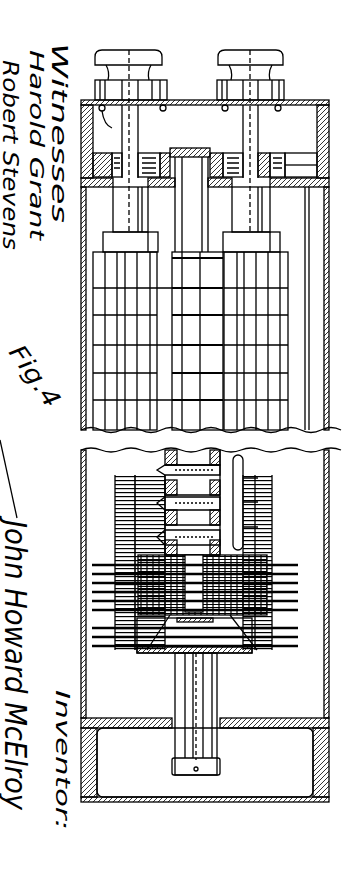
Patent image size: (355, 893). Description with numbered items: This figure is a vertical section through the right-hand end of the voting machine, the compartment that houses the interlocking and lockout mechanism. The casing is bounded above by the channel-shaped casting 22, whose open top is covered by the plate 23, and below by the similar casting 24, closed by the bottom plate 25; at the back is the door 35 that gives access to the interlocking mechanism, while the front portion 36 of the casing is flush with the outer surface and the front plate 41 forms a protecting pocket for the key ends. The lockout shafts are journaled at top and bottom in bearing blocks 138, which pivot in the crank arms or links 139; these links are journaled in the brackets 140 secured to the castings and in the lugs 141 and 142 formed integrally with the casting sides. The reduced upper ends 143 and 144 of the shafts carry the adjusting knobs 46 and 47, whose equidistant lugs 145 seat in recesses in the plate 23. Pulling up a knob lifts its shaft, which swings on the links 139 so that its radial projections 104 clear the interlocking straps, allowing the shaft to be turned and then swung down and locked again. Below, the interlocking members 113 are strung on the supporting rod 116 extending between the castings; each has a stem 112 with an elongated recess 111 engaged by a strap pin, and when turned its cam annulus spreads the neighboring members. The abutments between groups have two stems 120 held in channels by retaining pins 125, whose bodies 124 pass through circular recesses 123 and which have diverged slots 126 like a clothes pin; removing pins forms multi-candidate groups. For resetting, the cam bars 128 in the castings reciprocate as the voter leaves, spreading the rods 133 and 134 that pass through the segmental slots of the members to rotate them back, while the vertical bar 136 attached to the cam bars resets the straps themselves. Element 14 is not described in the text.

The casing top corner 14 is at (327, 98).
The channel-shaped casting 22 is at (321, 190).
The plate 23 is at (190, 94).
The channel-shaped casting 24 is at (305, 728).
The bottom plate 25 is at (263, 803).
The door 35 is at (329, 644).
The front portion of the casing 36 is at (63, 659).
The front plate 41 is at (354, 333).
The adjusting knob 46 is at (163, 61).
The adjusting knob 47 is at (285, 60).
The radial projections 104 is at (108, 308).
The recess 111 is at (287, 566).
The stem 112 is at (293, 655).
The interlocking member 113 is at (132, 550).
The supporting rod 116 is at (188, 648).
The stems 120 is at (258, 503).
The recesses 123 is at (208, 460).
The bodies 124 is at (160, 476).
The retaining pins 125 is at (243, 460).
The slots 126 is at (125, 500).
The cam bars 128 is at (197, 145).
The rod 133 is at (172, 750).
The rod 134 is at (222, 742).
The vertical bar 136 is at (205, 222).
The bearing blocks 138 is at (118, 150).
The crank arms or links 139 is at (230, 178).
The brackets 140 is at (212, 177).
The lug 141 is at (82, 200).
The lug 142 is at (301, 165).
The reduced upper end 143 is at (156, 141).
The reduced upper end 144 is at (245, 140).
The lugs 145 is at (152, 107).